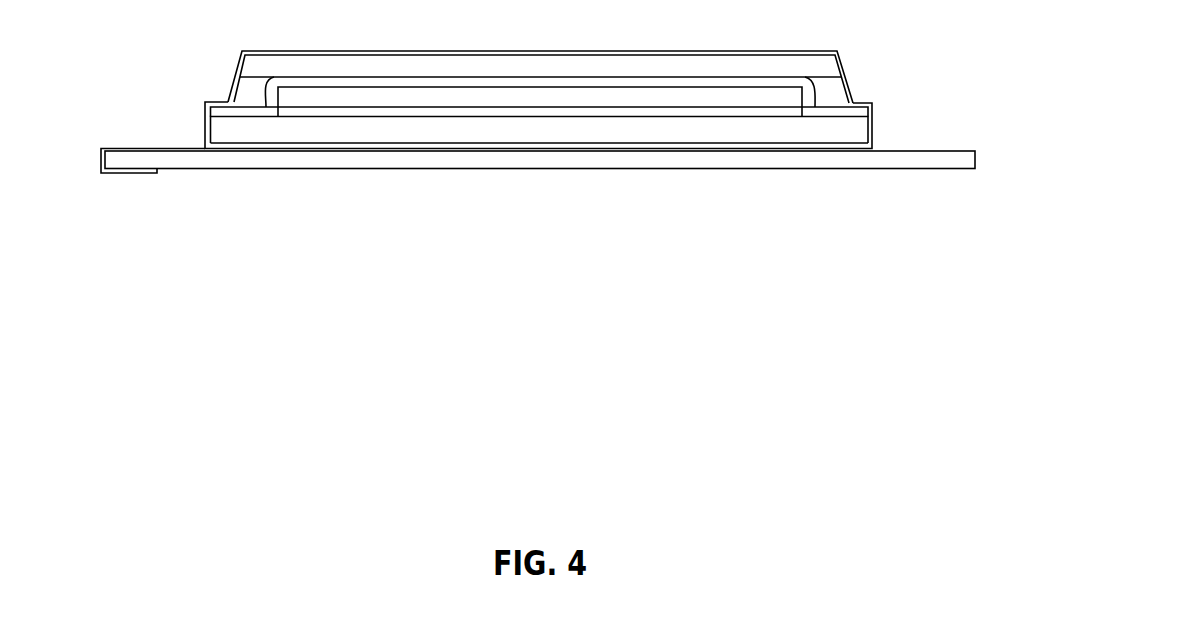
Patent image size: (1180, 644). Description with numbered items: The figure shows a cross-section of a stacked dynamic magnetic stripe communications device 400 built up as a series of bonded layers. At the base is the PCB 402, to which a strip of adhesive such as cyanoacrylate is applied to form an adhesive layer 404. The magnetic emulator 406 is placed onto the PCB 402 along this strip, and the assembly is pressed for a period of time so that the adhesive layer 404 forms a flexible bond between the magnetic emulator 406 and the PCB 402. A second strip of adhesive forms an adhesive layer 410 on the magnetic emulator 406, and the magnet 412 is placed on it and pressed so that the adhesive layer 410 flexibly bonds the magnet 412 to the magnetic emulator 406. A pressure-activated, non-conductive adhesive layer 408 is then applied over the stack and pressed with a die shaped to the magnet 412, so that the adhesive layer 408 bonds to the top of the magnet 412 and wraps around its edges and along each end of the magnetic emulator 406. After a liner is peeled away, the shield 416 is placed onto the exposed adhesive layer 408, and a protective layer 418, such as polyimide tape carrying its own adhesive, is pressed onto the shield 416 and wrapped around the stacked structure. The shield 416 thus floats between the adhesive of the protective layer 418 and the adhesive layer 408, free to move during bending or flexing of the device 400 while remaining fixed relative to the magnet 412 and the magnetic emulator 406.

The stacked dynamic magnetic stripe communications device 400 is at (1126, 42).
The PCB 402 is at (970, 160).
The adhesive layer 404 is at (867, 146).
The magnetic emulator 406 is at (529, 138).
The adhesive layer 408 is at (868, 110).
The adhesive layer 410 is at (290, 112).
The magnet 412 is at (529, 105).
The shield 416 is at (529, 74).
The protective layer 418 is at (101, 148).